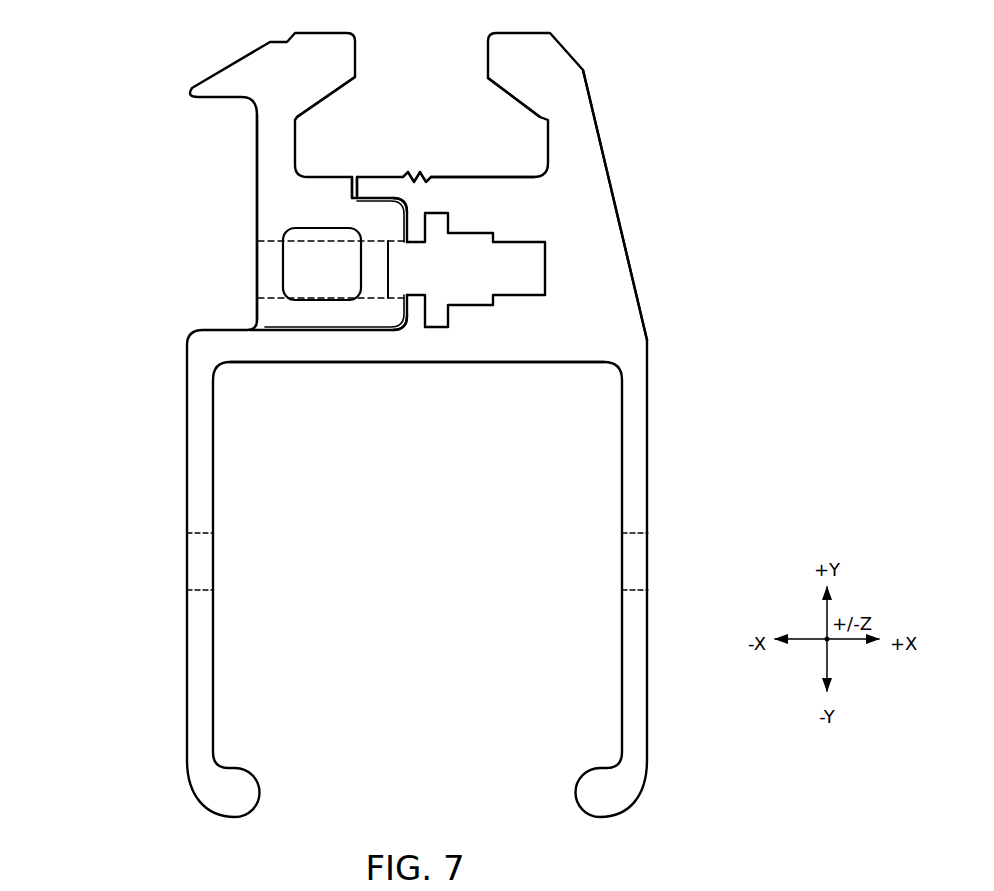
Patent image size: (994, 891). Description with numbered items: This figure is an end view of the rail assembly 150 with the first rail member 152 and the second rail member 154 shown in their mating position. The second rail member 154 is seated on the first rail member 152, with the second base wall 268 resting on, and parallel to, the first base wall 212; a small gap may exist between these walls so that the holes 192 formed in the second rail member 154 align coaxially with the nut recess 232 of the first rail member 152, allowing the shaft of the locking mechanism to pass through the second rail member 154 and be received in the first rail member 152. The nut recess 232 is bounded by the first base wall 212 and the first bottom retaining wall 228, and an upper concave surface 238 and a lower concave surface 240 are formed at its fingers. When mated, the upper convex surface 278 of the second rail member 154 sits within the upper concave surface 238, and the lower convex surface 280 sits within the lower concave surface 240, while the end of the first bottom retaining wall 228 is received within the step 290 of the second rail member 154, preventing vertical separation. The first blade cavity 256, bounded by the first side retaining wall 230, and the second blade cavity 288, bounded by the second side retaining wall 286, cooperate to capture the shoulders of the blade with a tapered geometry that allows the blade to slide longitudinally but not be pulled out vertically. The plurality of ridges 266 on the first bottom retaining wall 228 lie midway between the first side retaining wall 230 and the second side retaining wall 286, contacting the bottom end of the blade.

The rail assembly 150 is at (723, 327).
The first rail member 152 is at (760, 188).
The second rail member 154 is at (137, 180).
The holes 192 is at (265, 241).
The first base wall 212 is at (316, 362).
The first bottom retaining wall 228 is at (508, 178).
The first side retaining wall 230 is at (594, 118).
The nut recess 232 is at (513, 280).
The upper concave surface 238 is at (412, 205).
The lower concave surface 240 is at (402, 325).
The first blade cavity 256 is at (540, 118).
The plurality of ridges 266 is at (427, 176).
The second base wall 268 is at (266, 322).
The upper convex surface 278 is at (396, 203).
The lower convex surface 280 is at (360, 328).
The second side retaining wall 286 is at (264, 140).
The second blade cavity 288 is at (325, 146).
The step 290 is at (351, 192).